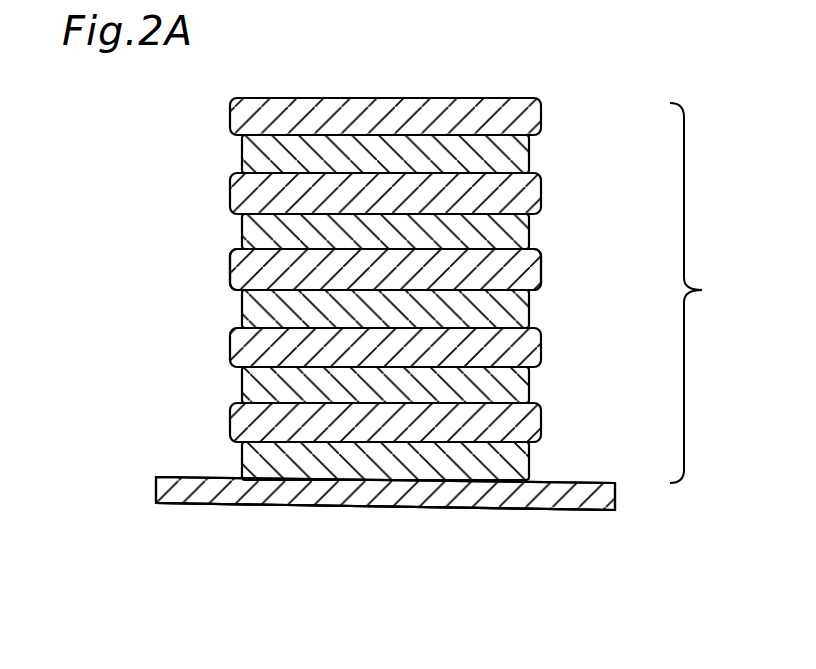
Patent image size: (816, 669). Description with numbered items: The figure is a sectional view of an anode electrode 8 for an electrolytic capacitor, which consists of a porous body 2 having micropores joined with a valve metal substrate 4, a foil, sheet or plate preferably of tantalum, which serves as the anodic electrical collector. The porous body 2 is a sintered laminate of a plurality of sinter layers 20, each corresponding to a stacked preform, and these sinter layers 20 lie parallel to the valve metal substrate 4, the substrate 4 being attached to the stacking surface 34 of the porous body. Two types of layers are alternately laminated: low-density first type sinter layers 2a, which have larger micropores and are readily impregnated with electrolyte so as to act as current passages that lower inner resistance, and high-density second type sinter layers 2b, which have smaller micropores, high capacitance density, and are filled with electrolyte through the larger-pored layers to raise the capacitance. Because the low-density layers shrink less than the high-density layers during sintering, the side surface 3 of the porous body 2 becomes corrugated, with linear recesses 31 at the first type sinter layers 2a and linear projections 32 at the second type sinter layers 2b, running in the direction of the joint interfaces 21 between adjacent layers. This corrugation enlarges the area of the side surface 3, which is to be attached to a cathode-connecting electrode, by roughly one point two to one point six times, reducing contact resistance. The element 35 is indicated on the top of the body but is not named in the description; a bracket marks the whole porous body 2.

The porous body 2 is at (406, 245).
The first type of sinter layer 2a is at (517, 283).
The second type of sinter layer 2b is at (329, 312).
The side surface 3 is at (204, 244).
The sinter layer 20 is at (517, 418).
The joint interface 21 is at (257, 387).
The linear recess 31 is at (245, 230).
The linear projection 32 is at (260, 333).
The stacking surface 34 is at (347, 508).
The top surface 35 is at (471, 96).
The valve metal substrate 4 is at (595, 497).
The electrode 8 is at (425, 594).